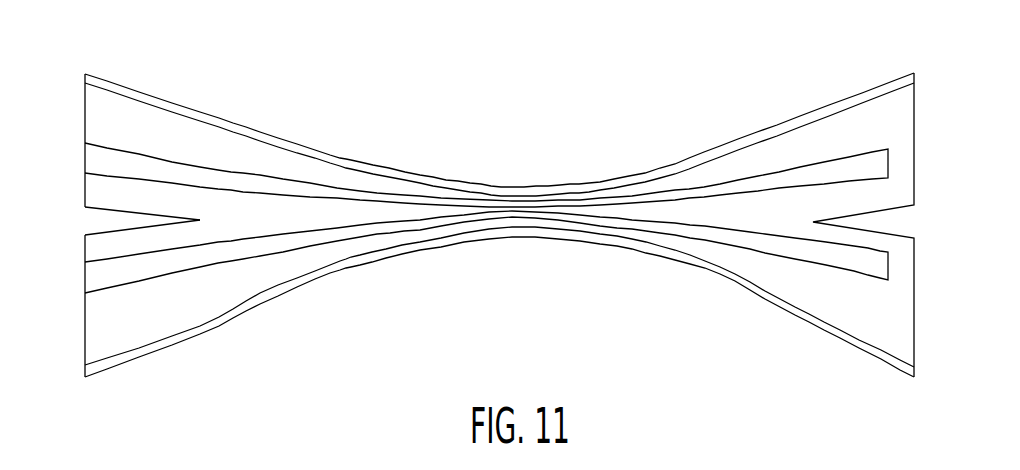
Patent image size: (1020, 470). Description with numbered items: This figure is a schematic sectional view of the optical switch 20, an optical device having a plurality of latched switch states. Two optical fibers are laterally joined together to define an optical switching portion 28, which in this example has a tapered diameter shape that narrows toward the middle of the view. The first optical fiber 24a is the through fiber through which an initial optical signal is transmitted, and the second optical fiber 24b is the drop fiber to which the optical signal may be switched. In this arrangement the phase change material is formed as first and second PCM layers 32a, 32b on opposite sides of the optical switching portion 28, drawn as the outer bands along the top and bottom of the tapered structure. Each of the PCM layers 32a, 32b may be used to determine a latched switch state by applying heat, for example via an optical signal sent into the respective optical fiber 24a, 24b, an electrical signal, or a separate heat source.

The optical switch 20 is at (472, 217).
The first optical fiber 24a is at (85, 110).
The second optical fiber 24b is at (85, 328).
The optical switching portion 28 is at (518, 150).
The first PCM layer 32a is at (233, 122).
The second PCM layer 32b is at (225, 318).